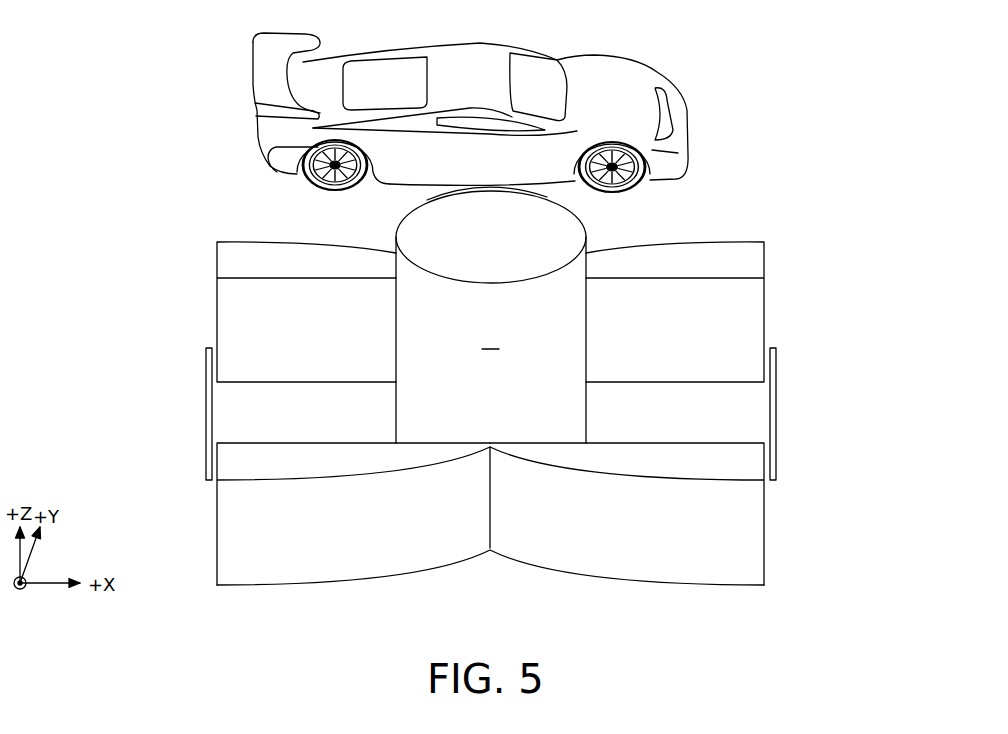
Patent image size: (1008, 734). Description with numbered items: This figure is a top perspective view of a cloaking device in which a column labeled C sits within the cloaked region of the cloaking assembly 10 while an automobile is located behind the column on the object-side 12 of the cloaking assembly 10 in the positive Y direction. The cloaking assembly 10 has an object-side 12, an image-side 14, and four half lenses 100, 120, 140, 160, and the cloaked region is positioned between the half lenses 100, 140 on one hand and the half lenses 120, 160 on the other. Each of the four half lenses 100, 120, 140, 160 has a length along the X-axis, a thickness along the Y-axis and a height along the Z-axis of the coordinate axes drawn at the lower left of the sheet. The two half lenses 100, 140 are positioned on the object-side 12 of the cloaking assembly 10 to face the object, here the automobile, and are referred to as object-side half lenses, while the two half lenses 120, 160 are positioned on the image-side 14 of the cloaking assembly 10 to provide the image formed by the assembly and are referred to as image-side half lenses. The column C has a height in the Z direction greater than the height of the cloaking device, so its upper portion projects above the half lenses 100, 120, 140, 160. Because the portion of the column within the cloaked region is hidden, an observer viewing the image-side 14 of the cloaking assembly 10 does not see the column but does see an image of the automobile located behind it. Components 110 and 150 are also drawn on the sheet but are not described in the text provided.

The cloaking assembly 10 is at (822, 158).
The object-side 12 is at (757, 178).
The image-side 14 is at (766, 612).
The half lens 100 is at (783, 262).
The right side bracket 110 is at (795, 413).
The half lens 120 is at (787, 538).
The half lens 140 is at (192, 263).
The left side bracket 150 is at (193, 417).
The half lens 160 is at (205, 632).